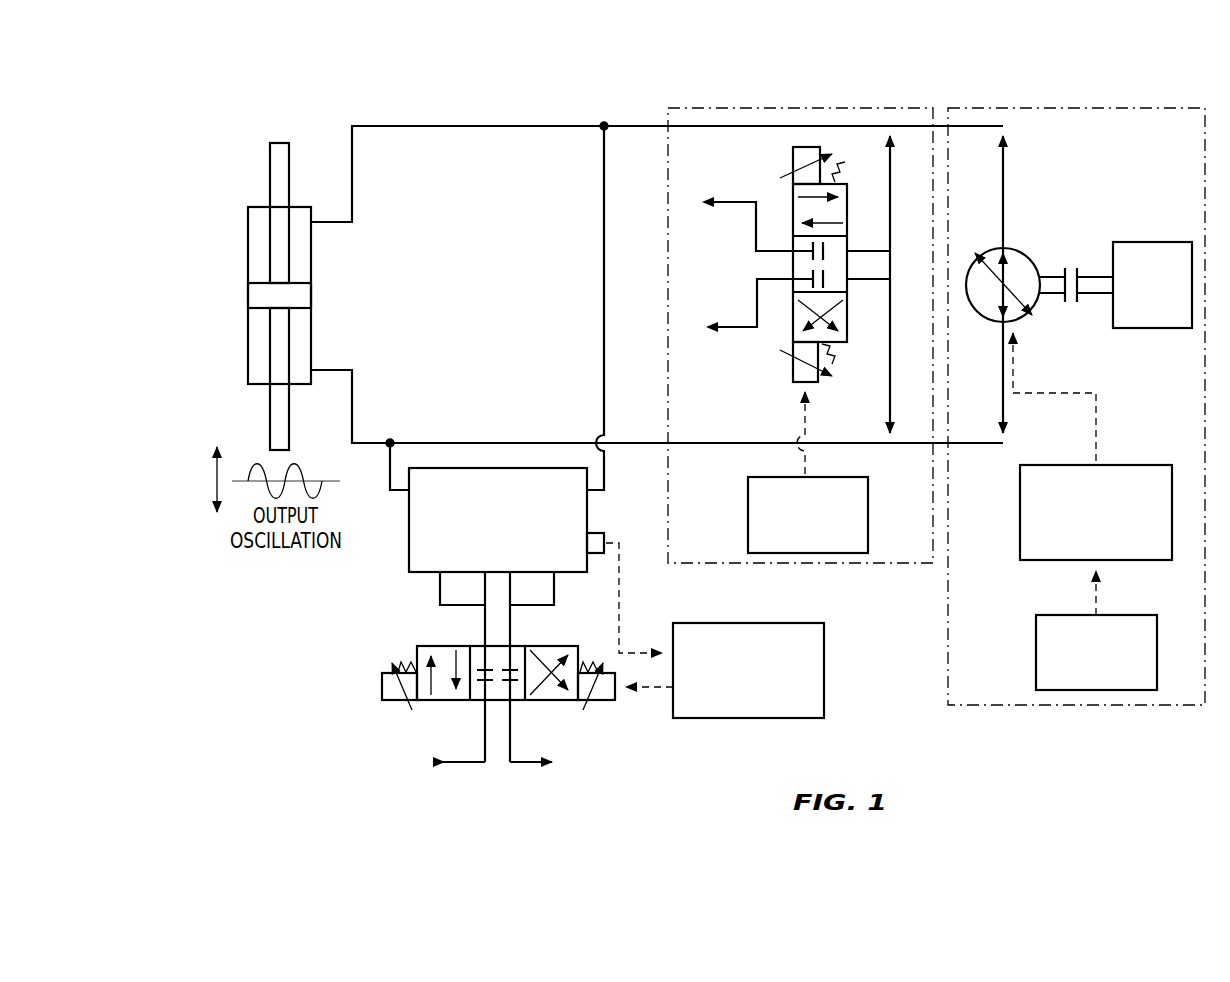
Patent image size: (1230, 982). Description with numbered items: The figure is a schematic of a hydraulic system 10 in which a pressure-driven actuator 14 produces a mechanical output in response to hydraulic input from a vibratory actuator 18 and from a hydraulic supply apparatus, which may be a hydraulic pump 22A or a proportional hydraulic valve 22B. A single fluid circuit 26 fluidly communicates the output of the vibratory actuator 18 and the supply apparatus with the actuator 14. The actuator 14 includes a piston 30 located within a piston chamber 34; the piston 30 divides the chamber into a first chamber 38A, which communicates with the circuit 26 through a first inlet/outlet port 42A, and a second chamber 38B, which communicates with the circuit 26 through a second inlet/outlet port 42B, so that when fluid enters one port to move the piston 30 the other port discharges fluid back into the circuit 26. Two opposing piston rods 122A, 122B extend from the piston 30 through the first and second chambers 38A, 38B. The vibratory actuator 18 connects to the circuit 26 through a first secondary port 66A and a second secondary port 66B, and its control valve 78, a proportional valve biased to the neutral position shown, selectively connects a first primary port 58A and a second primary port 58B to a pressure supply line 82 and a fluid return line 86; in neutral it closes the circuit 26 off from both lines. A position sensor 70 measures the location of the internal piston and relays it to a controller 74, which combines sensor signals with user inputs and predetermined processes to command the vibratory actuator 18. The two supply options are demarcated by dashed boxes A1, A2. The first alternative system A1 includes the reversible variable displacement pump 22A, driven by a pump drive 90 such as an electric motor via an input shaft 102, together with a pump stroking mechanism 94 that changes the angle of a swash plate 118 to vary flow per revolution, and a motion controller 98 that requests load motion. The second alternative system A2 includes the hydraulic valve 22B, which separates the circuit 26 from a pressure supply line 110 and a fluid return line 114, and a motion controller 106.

The hydraulic system 10 is at (225, 156).
The pressure-driven actuator 14 is at (238, 239).
The vibratory actuator 18 is at (383, 564).
The hydraulic pump 22A is at (1029, 241).
The proportional valve 22B is at (847, 163).
The fluid circuit 26 is at (468, 125).
The piston 30 is at (297, 297).
The piston chamber 34 is at (312, 253).
The first chamber 38A is at (258, 263).
The second chamber 38B is at (258, 347).
The first inlet/outlet port 42A is at (313, 222).
The second inlet/outlet port 42B is at (313, 368).
The first primary port 58A is at (438, 575).
The second primary port 58B is at (557, 575).
The first secondary port 66A is at (402, 493).
The second secondary port 66B is at (590, 492).
The position sensor 70 is at (597, 535).
The controller 74 is at (825, 670).
The control valve 78 is at (360, 709).
The pressure supply line 82 is at (460, 760).
The fluid return line 86 is at (530, 760).
The pump drive 90 is at (1157, 242).
The pump stroking mechanism 94 is at (1128, 465).
The motion controller 98 is at (1130, 612).
The input shaft 102 is at (1097, 273).
The motion controller 106 is at (870, 515).
The pressure supply line 110 is at (735, 203).
The fluid return line 114 is at (738, 325).
The swash plate 118 is at (1020, 298).
The first piston rod 122A is at (273, 158).
The second piston rod 122B is at (275, 423).
The first alternative system A1 is at (1070, 107).
The second alternative system A2 is at (733, 107).